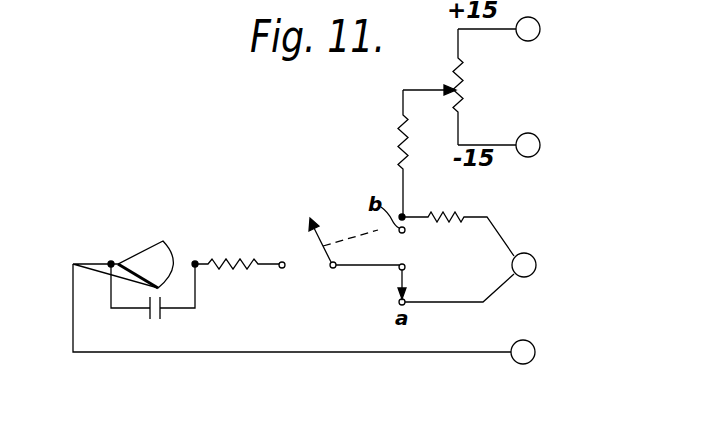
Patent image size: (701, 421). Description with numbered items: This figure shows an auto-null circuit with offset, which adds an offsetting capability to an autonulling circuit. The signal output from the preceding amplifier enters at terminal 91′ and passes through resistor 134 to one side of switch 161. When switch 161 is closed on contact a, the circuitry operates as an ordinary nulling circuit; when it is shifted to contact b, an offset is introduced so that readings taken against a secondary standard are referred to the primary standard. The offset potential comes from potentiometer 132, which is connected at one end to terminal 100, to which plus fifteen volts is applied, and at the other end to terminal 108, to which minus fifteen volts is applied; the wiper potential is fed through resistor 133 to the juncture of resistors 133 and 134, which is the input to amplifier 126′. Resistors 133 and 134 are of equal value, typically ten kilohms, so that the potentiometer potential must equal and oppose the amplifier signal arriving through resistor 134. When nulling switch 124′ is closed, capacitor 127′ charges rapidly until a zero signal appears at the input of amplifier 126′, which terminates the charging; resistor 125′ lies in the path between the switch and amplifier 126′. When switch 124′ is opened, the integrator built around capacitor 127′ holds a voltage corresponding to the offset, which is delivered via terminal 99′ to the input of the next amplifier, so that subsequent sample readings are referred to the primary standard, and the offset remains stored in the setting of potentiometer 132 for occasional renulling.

The terminal 100 is at (540, 27).
The terminal 108 is at (540, 143).
The potentiometer 132 is at (463, 96).
The resistor 133 is at (400, 141).
The resistor 134 is at (452, 212).
The terminal 91′ is at (536, 262).
The terminal 99′ is at (535, 349).
The switch 161 is at (405, 292).
The nulling switch 124′ is at (322, 250).
The resistor 125′ is at (226, 256).
The amplifier 126′ is at (135, 264).
The capacitor 127′ is at (162, 318).